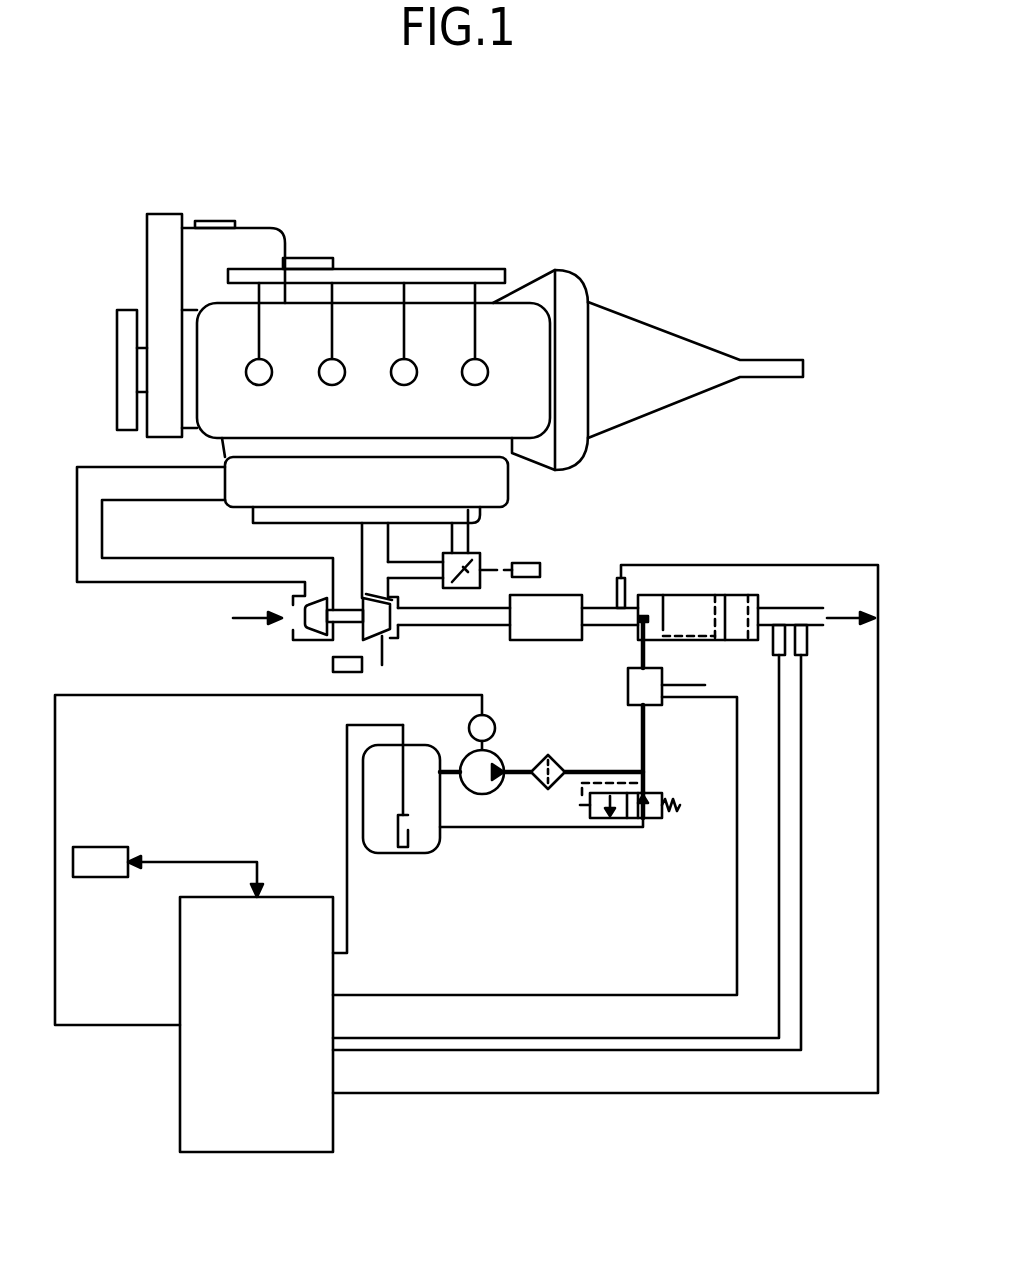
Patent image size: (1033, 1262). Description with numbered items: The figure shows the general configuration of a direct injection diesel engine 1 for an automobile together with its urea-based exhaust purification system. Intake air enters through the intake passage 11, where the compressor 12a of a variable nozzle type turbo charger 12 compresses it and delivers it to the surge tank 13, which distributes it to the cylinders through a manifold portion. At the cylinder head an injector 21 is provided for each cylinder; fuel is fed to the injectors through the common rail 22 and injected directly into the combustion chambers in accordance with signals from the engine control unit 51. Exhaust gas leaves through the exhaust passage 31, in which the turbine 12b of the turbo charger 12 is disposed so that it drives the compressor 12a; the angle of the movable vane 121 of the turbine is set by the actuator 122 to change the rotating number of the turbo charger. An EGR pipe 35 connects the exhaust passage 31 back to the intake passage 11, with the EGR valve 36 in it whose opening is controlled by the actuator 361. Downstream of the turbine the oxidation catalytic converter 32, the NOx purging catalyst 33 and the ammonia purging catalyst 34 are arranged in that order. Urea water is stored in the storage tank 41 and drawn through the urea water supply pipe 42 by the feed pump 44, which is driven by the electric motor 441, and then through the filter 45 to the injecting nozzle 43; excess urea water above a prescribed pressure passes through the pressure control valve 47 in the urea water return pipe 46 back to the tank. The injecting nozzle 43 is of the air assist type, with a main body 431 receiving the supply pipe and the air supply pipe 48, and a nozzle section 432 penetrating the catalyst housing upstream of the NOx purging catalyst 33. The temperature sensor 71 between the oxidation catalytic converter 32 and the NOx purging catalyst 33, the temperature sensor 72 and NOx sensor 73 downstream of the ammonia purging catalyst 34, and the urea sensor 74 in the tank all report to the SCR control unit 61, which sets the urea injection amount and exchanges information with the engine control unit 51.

The engine 1 is at (572, 222).
The intake passage 11 is at (90, 466).
The variable nozzle type turbo charger 12 is at (346, 641).
The compressor 12a is at (305, 644).
The turbine 12b is at (392, 640).
The movable vane 121 is at (386, 648).
The actuator 122 is at (362, 669).
The surge tank 13 is at (243, 512).
The injector 21 is at (259, 386).
The common rail 22 is at (470, 269).
The exhaust passage 31 is at (470, 630).
The oxidation catalytic converter 32 is at (558, 595).
The NOx purging catalyst 33 is at (707, 614).
The ammonia purging catalyst 34 is at (740, 595).
The EGR pipe 35 is at (395, 560).
The EGR valve 36 is at (471, 532).
The actuator 361 is at (526, 563).
The storage tank 41 is at (417, 855).
The urea water supply pipe 42 is at (646, 752).
The injecting nozzle 43 is at (535, 805).
The main body 431 is at (628, 686).
The nozzle section 432 is at (640, 641).
The feed pump 44 is at (497, 762).
The electric motor 441 is at (492, 722).
The filter 45 is at (556, 760).
The urea water return pipe 46 is at (548, 829).
The pressure control valve 47 is at (647, 792).
The air supply pipe 48 is at (687, 671).
The engine control unit 51 is at (100, 847).
The SCR control unit 61 is at (297, 1156).
The temperature sensor 71 is at (614, 580).
The temperature sensor 72 is at (773, 657).
The NOx sensor 73 is at (806, 657).
The urea sensor 74 is at (398, 856).